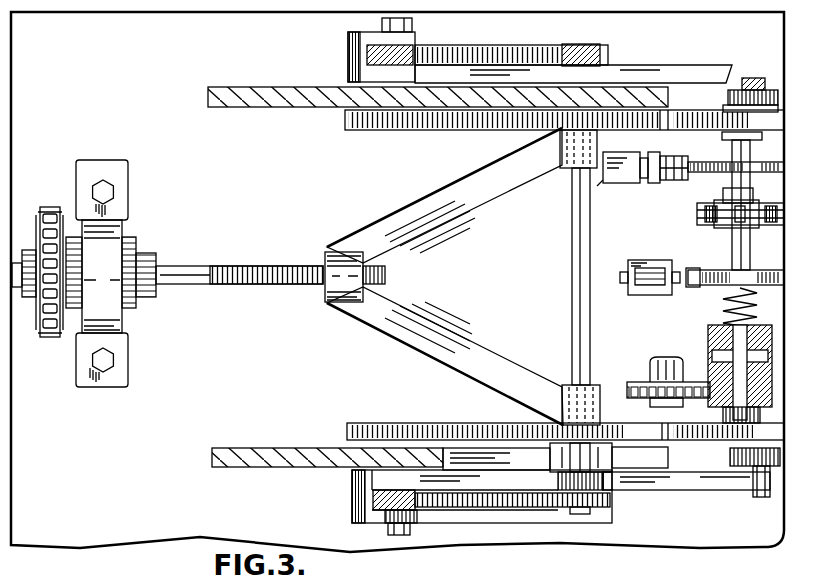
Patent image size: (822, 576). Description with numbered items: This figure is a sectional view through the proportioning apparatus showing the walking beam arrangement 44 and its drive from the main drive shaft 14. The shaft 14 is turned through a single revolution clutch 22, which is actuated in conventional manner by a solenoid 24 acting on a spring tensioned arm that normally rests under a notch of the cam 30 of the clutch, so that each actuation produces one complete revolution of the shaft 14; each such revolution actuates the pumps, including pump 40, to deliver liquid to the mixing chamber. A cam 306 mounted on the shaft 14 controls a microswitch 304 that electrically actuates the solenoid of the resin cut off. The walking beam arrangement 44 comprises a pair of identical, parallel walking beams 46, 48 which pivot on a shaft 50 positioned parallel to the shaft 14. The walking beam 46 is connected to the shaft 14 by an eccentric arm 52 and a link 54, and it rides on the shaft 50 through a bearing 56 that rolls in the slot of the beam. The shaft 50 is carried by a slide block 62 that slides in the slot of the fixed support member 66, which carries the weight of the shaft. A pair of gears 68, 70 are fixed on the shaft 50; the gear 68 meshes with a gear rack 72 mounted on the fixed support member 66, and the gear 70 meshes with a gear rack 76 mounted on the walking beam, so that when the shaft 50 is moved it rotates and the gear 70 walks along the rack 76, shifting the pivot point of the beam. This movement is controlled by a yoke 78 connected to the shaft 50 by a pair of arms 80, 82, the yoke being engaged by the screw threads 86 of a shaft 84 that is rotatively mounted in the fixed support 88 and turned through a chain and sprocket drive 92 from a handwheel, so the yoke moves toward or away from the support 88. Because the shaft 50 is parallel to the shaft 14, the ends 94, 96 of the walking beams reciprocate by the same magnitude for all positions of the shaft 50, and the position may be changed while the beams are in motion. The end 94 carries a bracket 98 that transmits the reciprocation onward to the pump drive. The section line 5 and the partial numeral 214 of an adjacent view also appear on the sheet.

The section line 5- 5 is at (691, 302).
The main drive shaft 14 is at (733, 243).
The single revolution clutch 22 is at (708, 332).
The solenoid 24 is at (655, 297).
The cam 30 is at (718, 284).
The pump 40 is at (128, 566).
The walking beam arrangement 44 is at (431, 276).
The walking beam 46 is at (656, 489).
The walking beam 48 is at (662, 68).
The shaft 50 is at (572, 322).
The eccentric arm 52 is at (775, 470).
The link 54 is at (733, 466).
The bearing 56 is at (600, 488).
The slide block 62 is at (556, 478).
The fixed support member 66 is at (213, 468).
The gear 68 is at (602, 426).
The gear 70 is at (575, 506).
The gear rack 72 is at (460, 424).
The gear rack 76 is at (468, 506).
The yoke 78 is at (333, 303).
The arm 80 is at (463, 208).
The arm 82 is at (400, 313).
The shaft 84 is at (239, 281).
The screw threads 86 is at (243, 263).
The fixed support 88 is at (125, 321).
The chain and sprocket drive 92 is at (57, 335).
The end of walking beam 94 is at (458, 507).
The end of walking beam 96 is at (348, 68).
The bracket 98 is at (417, 517).
The element of adjacent figure 214 is at (518, 566).
The microswitch 304 is at (643, 155).
The cam 306 is at (725, 175).